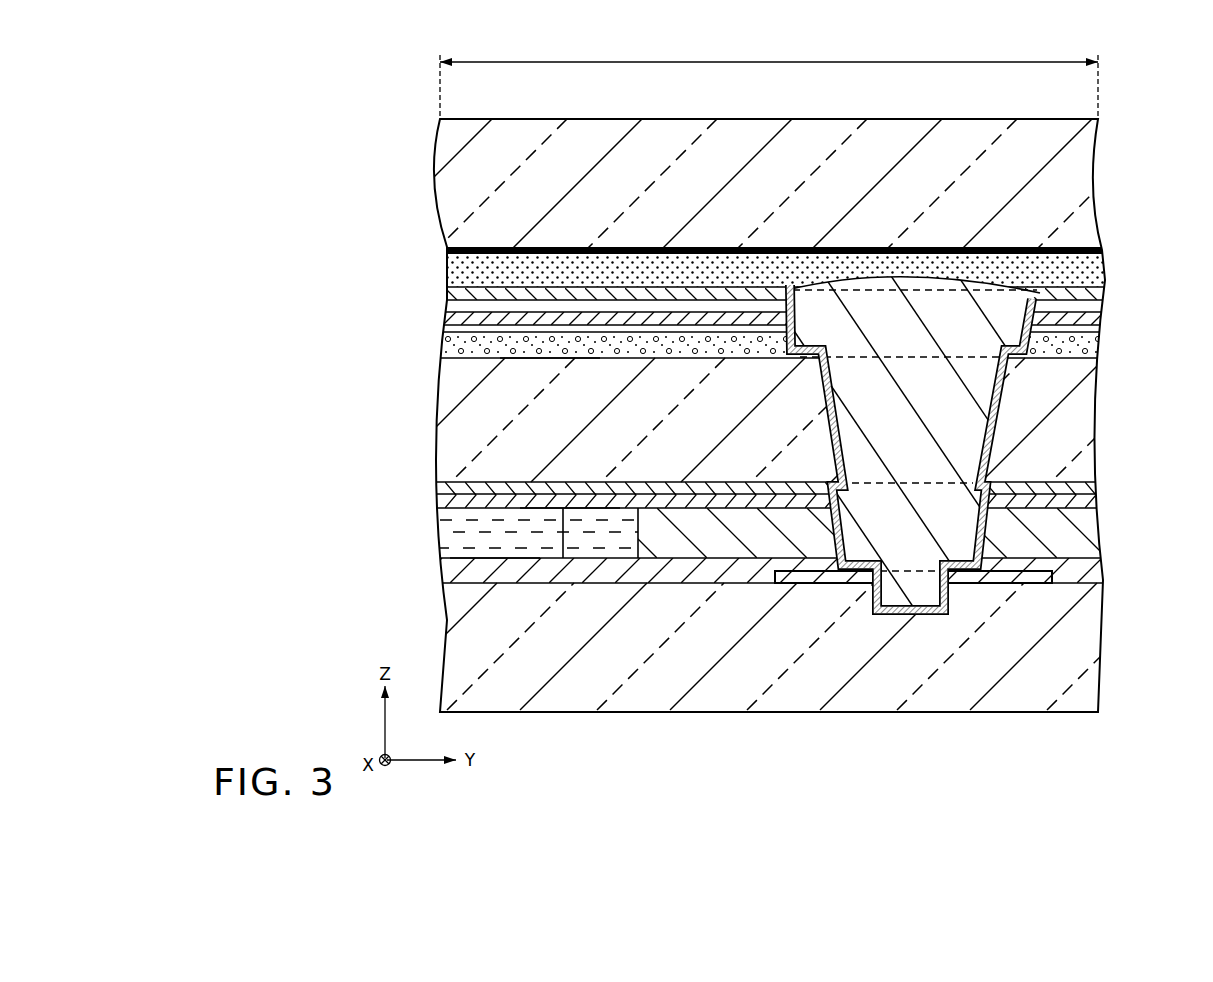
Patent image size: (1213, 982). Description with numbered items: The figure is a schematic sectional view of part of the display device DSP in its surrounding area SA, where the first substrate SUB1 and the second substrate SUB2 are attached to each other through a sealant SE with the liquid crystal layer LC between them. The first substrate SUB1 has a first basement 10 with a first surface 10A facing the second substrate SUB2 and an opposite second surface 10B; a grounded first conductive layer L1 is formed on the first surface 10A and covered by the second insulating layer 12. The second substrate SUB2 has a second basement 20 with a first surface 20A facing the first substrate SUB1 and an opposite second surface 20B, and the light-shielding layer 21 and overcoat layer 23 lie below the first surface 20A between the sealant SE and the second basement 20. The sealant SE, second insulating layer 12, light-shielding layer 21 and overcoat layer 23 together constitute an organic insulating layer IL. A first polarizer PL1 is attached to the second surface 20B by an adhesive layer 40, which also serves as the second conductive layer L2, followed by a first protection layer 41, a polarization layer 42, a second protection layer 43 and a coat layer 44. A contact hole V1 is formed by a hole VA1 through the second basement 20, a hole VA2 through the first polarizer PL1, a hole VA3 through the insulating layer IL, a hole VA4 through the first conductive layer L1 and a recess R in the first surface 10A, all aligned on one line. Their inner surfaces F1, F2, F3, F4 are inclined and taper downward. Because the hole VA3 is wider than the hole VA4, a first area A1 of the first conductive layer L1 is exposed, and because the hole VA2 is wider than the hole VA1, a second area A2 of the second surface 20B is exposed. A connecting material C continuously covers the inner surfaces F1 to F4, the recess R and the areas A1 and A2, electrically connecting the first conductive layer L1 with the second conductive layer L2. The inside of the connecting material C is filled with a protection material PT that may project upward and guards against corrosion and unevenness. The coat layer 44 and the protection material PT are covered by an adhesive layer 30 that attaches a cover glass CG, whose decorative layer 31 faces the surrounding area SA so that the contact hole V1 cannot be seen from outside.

The display device DSP is at (1110, 129).
The surrounding area SA is at (769, 78).
The cover glass CG is at (1085, 171).
The decorative layer 31 is at (1085, 246).
The adhesive layer 30 is at (1085, 268).
The first polarizer PL1 is at (1106, 287).
The coat layer 44 is at (448, 294).
The second protection layer 43 is at (455, 307).
The polarization layer 42 is at (452, 318).
The first protection layer 41 is at (448, 330).
The adhesive layer 40 is at (445, 350).
The second conductive layer L2 is at (744, 368).
The second substrate SUB2 is at (430, 440).
The second basement 20 is at (1085, 390).
The first surface 20A is at (558, 516).
The second surface 20B is at (537, 353).
The insulating layer IL is at (1154, 462).
The light-shielding layer 21 is at (1090, 489).
The overcoat layer 23 is at (1083, 503).
The liquid crystal layer LC is at (448, 529).
The sealant SE is at (657, 534).
The second insulating layer 12 is at (1085, 577).
The first conductive layer L1 is at (803, 581).
The first substrate SUB1 is at (430, 599).
The first basement 10 is at (1096, 637).
The first surface 10A is at (488, 554).
The second surface 10B is at (548, 714).
The contact hole V1 is at (935, 304).
The hole VA1 is at (966, 396).
The hole VA2 is at (960, 317).
The hole VA3 is at (964, 533).
The hole VA4 is at (951, 587).
The recess R is at (918, 615).
The connecting material C is at (992, 447).
The protection material PT is at (995, 421).
The inner surface F1 is at (838, 406).
The inner surface F2 is at (790, 295).
The inner surface F3 is at (849, 517).
The inner surface F4 is at (876, 576).
The first area A1 is at (861, 562).
The second area A2 is at (809, 345).